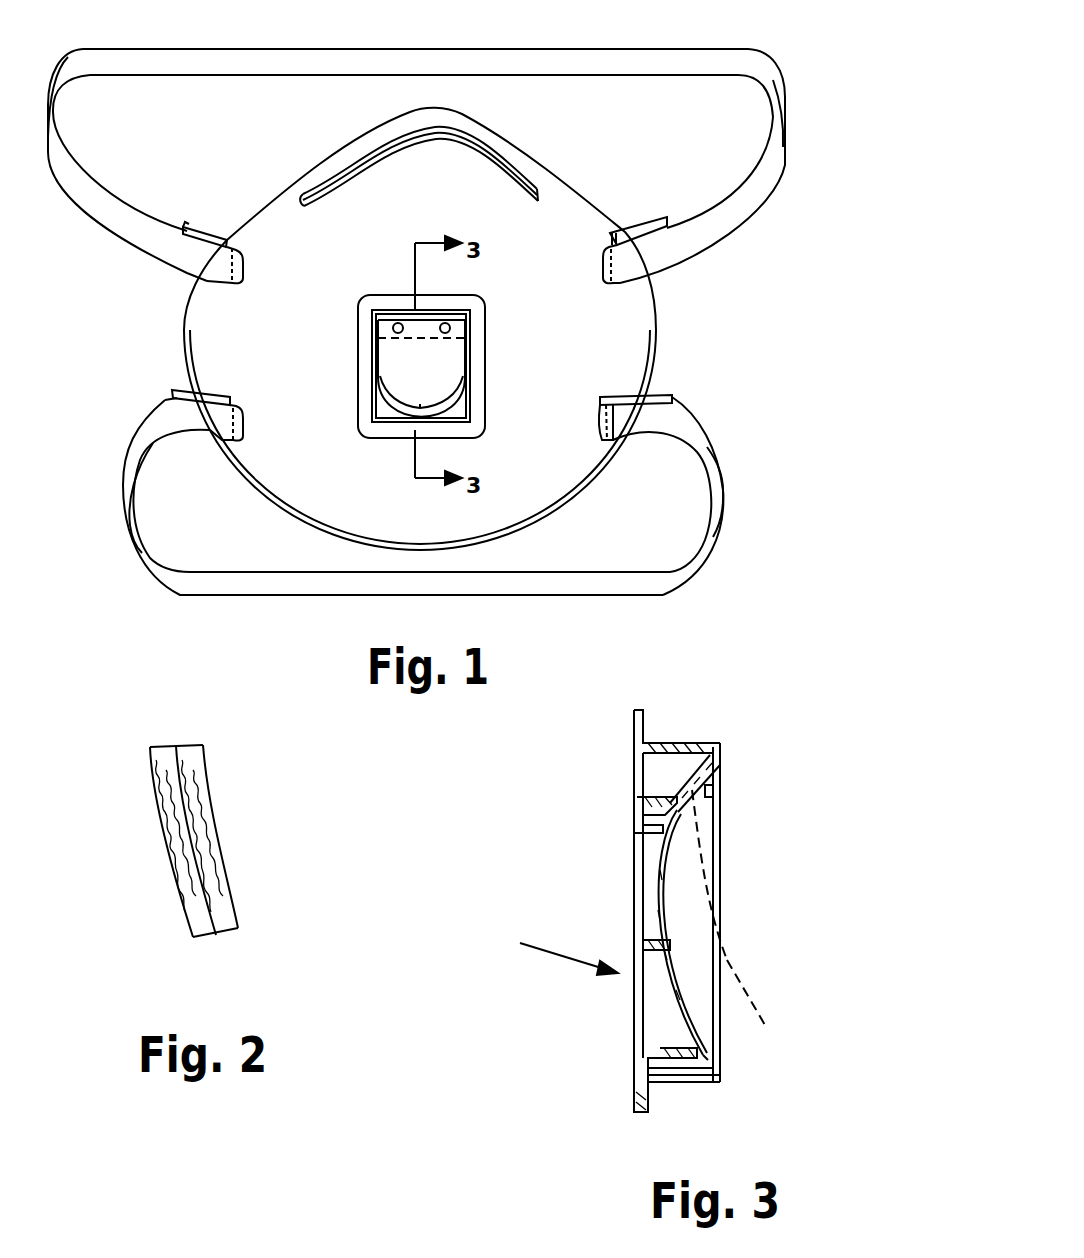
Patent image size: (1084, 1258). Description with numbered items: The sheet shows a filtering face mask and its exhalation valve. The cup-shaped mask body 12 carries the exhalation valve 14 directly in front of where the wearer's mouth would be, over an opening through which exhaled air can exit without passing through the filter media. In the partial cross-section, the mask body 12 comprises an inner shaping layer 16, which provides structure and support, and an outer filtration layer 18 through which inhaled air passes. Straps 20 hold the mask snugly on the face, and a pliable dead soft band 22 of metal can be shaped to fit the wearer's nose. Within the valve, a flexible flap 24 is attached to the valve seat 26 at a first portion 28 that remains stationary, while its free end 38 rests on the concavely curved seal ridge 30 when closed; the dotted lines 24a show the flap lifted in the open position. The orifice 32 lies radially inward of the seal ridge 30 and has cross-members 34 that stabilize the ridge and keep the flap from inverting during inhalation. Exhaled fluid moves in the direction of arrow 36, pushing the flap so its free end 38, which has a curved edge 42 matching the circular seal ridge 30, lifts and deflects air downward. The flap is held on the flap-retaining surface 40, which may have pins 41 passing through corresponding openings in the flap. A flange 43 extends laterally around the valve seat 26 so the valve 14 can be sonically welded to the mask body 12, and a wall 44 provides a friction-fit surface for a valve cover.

In FIG. 1, the mask body 12 is at (575, 197).
In FIG. 2, the mask body 12 is at (167, 890).
In FIG. 1, the exhalation valve 14 is at (483, 297).
In FIG. 3, the exhalation valve 14 is at (767, 677).
In FIG. 2, the inner shaping layer 16 is at (205, 812).
In FIG. 1, the outer filtration layer 18 is at (652, 336).
In FIG. 2, the outer filtration layer 18 is at (150, 808).
In FIG. 1, the straps 20 is at (733, 212).
In FIG. 1, the pliable dead soft band 22 is at (500, 173).
In FIG. 1, the flexible flap 24 is at (452, 372).
In FIG. 3, the flexible flap 24 is at (655, 905).
In FIG. 3, the flexible flap in open position 24a is at (720, 955).
In FIG. 1, the valve seat 26 is at (358, 358).
In FIG. 3, the valve seat 26 is at (687, 745).
In FIG. 1, the first portion of flap 28 is at (378, 328).
In FIG. 3, the first portion of flap 28 is at (695, 797).
In FIG. 3, the seal ridge 30 is at (663, 880).
In FIG. 3, the orifice 32 is at (672, 1047).
In FIG. 3, the cross-members 34 is at (648, 955).
In FIG. 3, the fluid flow arrow 36 is at (550, 957).
In FIG. 1, the free end 38 is at (420, 408).
In FIG. 3, the free end 38 is at (705, 1046).
In FIG. 3, the flap-retaining surface 40 is at (717, 770).
In FIG. 1, the pins 41 is at (451, 328).
In FIG. 3, the pins 41 is at (713, 801).
In FIG. 1, the curved edge 42 is at (478, 420).
In FIG. 3, the curved edge 42 is at (710, 1075).
In FIG. 1, the flange 43 is at (488, 405).
In FIG. 3, the flange 43 is at (645, 718).
In FIG. 1, the wall 44 is at (360, 413).
In FIG. 3, the wall 44 is at (708, 867).